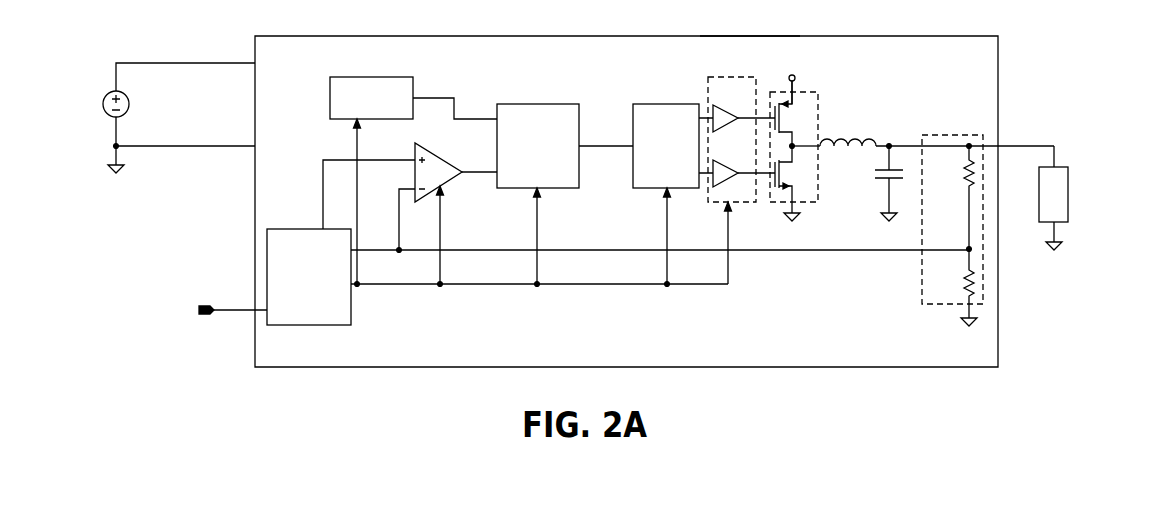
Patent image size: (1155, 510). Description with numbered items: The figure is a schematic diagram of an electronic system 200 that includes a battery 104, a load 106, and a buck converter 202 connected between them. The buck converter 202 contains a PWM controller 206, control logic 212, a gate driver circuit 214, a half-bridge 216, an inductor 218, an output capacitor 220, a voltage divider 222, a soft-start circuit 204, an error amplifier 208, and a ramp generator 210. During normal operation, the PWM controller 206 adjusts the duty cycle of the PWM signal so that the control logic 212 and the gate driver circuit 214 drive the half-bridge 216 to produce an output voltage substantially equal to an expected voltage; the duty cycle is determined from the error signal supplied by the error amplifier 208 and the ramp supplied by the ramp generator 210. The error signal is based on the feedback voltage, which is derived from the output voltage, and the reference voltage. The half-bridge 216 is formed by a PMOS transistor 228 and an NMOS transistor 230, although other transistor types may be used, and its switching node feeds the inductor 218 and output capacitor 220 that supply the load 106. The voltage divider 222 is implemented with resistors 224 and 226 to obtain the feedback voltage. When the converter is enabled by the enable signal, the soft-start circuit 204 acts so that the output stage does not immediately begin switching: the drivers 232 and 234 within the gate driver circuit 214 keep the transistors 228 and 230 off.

The electronic system 200 is at (276, 23).
The buck converter 202 is at (737, 36).
The battery 104 is at (103, 104).
The load 106 is at (1039, 197).
The soft-start circuit 204 is at (275, 229).
The PWM controller 206 is at (549, 104).
The error amplifier 208 is at (435, 160).
The ramp generator 210 is at (395, 77).
The control logic 212 is at (677, 104).
The gate driver circuit 214 is at (720, 77).
The half-bridge 216 is at (808, 92).
The inductor 218 is at (862, 139).
The output capacitor 220 is at (873, 173).
The voltage divider 222 is at (959, 135).
The resistor 224 is at (963, 171).
The resistor 226 is at (963, 273).
The transistor 228 is at (792, 120).
The transistor 230 is at (792, 174).
The driver 232 is at (725, 108).
The driver 234 is at (725, 163).